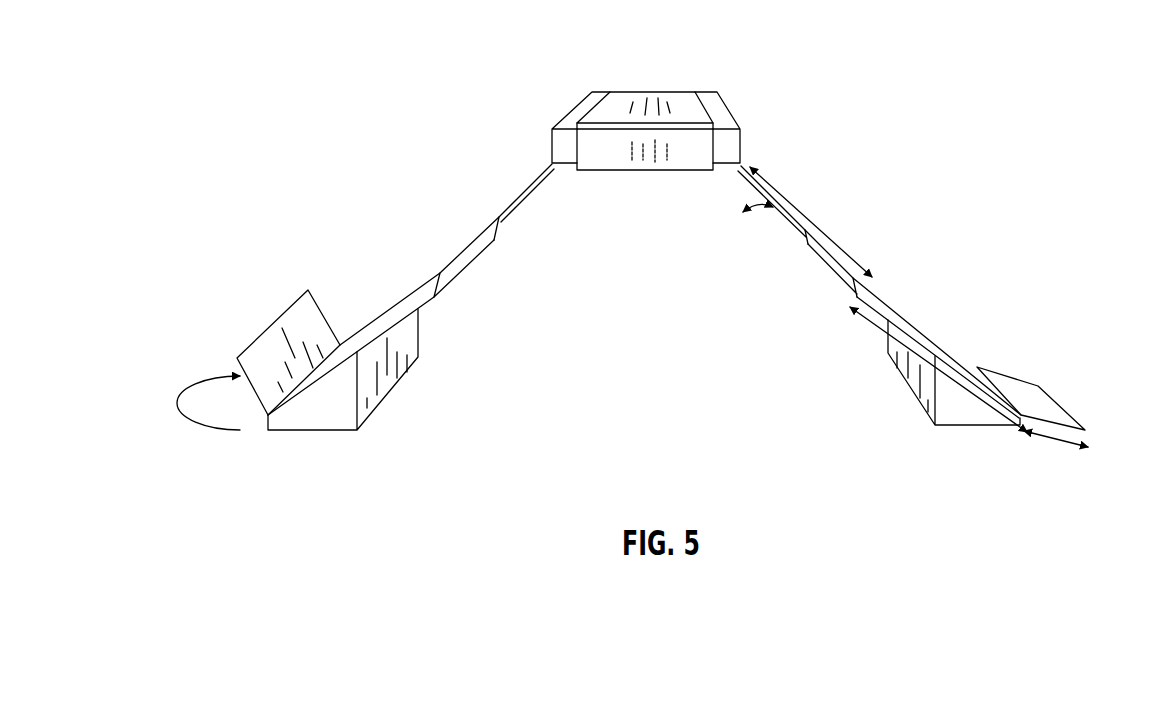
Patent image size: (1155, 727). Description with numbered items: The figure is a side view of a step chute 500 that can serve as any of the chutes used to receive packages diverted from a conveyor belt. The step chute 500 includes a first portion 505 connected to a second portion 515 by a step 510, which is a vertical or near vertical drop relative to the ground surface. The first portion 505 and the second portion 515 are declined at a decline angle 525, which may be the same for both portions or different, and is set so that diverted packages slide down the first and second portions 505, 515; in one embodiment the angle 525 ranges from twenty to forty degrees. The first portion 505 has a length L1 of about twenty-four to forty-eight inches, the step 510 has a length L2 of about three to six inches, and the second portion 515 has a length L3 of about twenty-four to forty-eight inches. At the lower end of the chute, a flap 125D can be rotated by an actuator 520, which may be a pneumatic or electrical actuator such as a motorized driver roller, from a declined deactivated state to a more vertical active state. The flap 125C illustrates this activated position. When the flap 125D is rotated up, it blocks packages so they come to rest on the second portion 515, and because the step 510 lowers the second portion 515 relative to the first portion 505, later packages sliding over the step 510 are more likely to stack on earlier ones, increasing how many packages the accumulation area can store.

The step chute 500 is at (1000, 40).
The flap 125C is at (305, 315).
The flap 125D is at (1043, 390).
The first portion 505 is at (786, 209).
The step 510 is at (842, 273).
The second portion 515 is at (892, 311).
The actuator 520 is at (972, 428).
The decline angle 525 is at (757, 212).
The length of the first portion L1 is at (829, 238).
The length of the step L2 is at (888, 340).
The length of the second portion L3 is at (1052, 438).